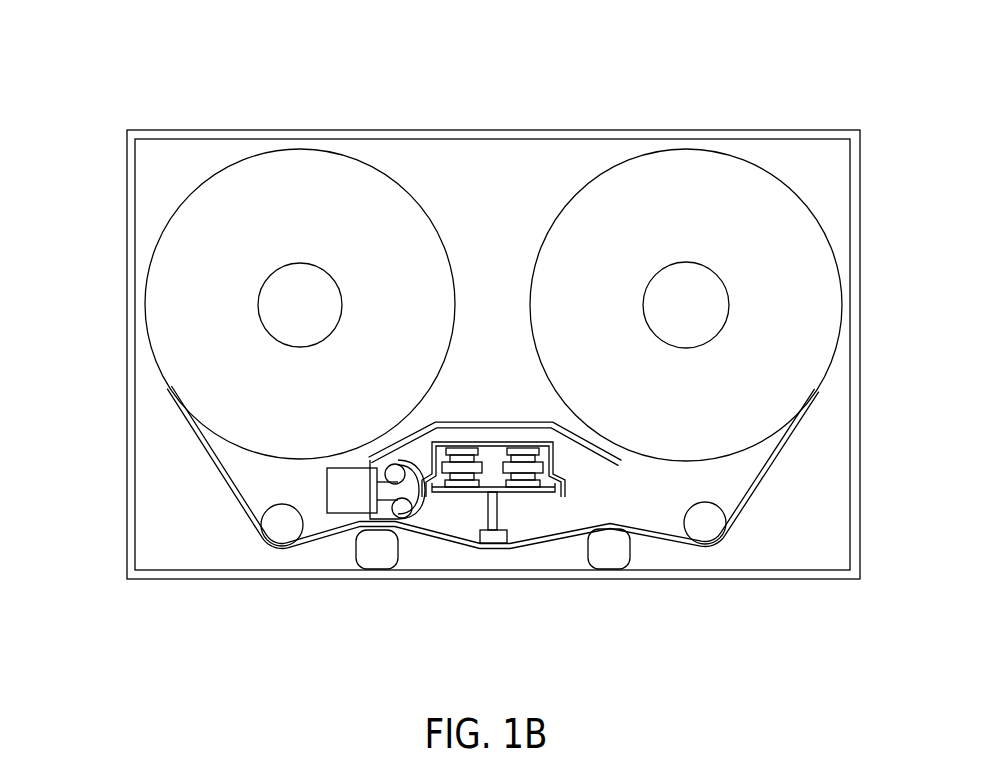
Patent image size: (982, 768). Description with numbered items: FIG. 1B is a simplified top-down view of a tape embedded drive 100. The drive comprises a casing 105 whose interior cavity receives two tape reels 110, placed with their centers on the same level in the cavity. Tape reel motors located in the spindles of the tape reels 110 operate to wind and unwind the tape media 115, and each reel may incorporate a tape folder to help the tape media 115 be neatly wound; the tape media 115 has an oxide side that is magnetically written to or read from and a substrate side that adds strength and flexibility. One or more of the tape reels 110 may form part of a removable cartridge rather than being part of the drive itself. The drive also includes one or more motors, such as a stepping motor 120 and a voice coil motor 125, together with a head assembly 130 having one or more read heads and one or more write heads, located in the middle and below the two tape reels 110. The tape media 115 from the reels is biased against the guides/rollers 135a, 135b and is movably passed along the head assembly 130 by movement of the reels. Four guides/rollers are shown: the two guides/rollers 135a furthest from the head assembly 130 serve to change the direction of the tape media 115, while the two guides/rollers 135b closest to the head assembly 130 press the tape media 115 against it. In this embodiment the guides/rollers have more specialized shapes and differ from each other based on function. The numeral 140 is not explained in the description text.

The tape embedded drive 100 is at (123, 66).
The casing 105 is at (523, 130).
The tape reels 110 is at (285, 150).
The tape media 115 is at (228, 487).
The stepping motor 120 is at (337, 515).
The voice coil motor 125 is at (467, 495).
The head assembly 130 is at (492, 547).
The guides/rollers 135a is at (280, 527).
The guides/rollers 135b is at (377, 553).
The reel hub 140 is at (330, 274).